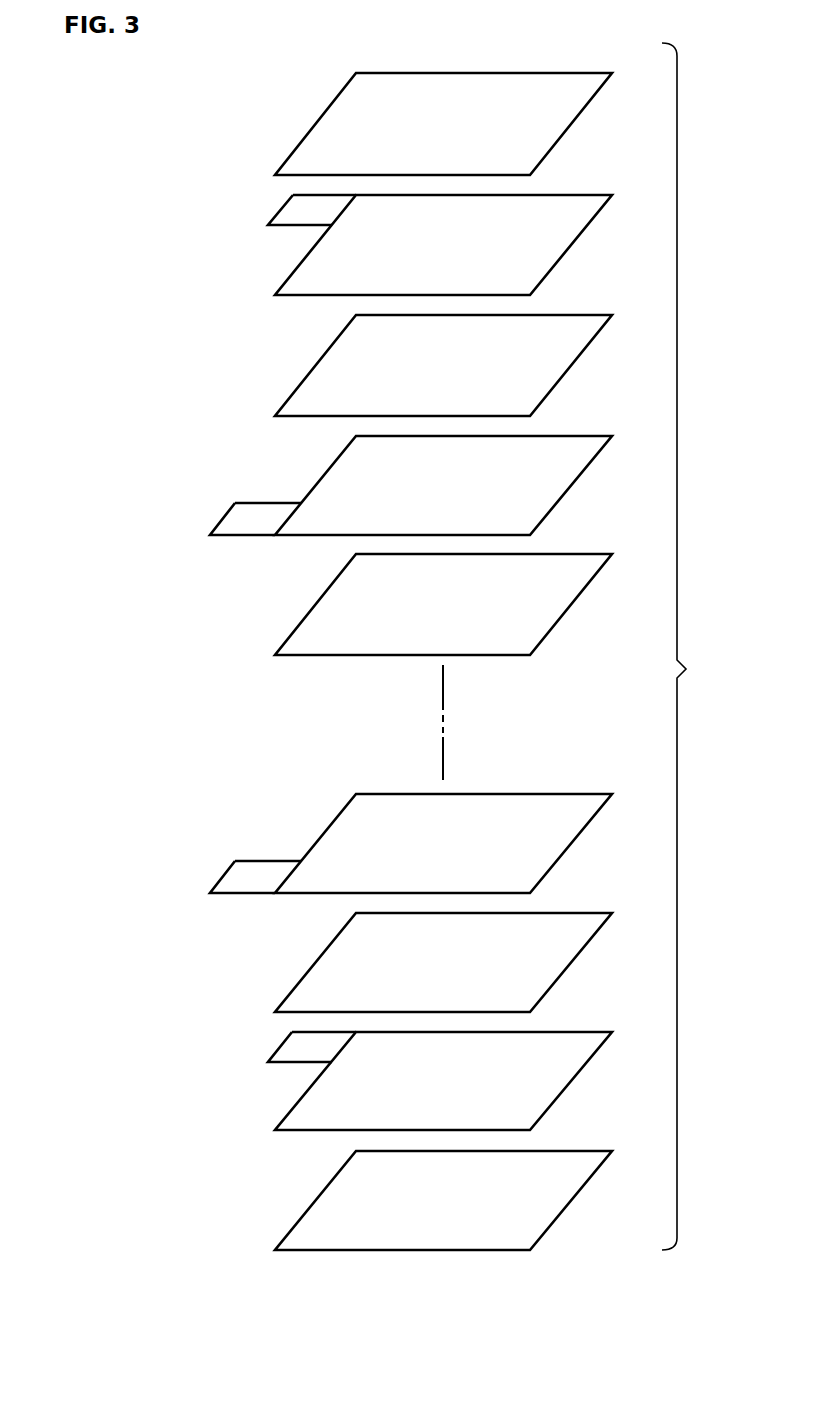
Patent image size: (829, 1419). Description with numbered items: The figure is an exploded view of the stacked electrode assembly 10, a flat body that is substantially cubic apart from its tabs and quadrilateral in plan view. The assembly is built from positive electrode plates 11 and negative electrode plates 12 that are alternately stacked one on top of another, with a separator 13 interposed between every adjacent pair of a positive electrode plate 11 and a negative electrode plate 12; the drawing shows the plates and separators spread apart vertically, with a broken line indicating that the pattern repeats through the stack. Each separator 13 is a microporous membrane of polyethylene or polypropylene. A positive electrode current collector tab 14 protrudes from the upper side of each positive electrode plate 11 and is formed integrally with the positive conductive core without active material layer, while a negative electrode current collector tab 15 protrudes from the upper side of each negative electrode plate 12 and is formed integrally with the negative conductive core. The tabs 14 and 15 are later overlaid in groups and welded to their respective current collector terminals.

The stacked electrode assembly 10 is at (460, 643).
The positive electrode plate 11 is at (427, 664).
The negative electrode plate 12 is at (453, 650).
The separator 13 is at (597, 73).
The positive electrode current collector tab 14 is at (237, 520).
The negative electrode current collector tab 15 is at (291, 212).